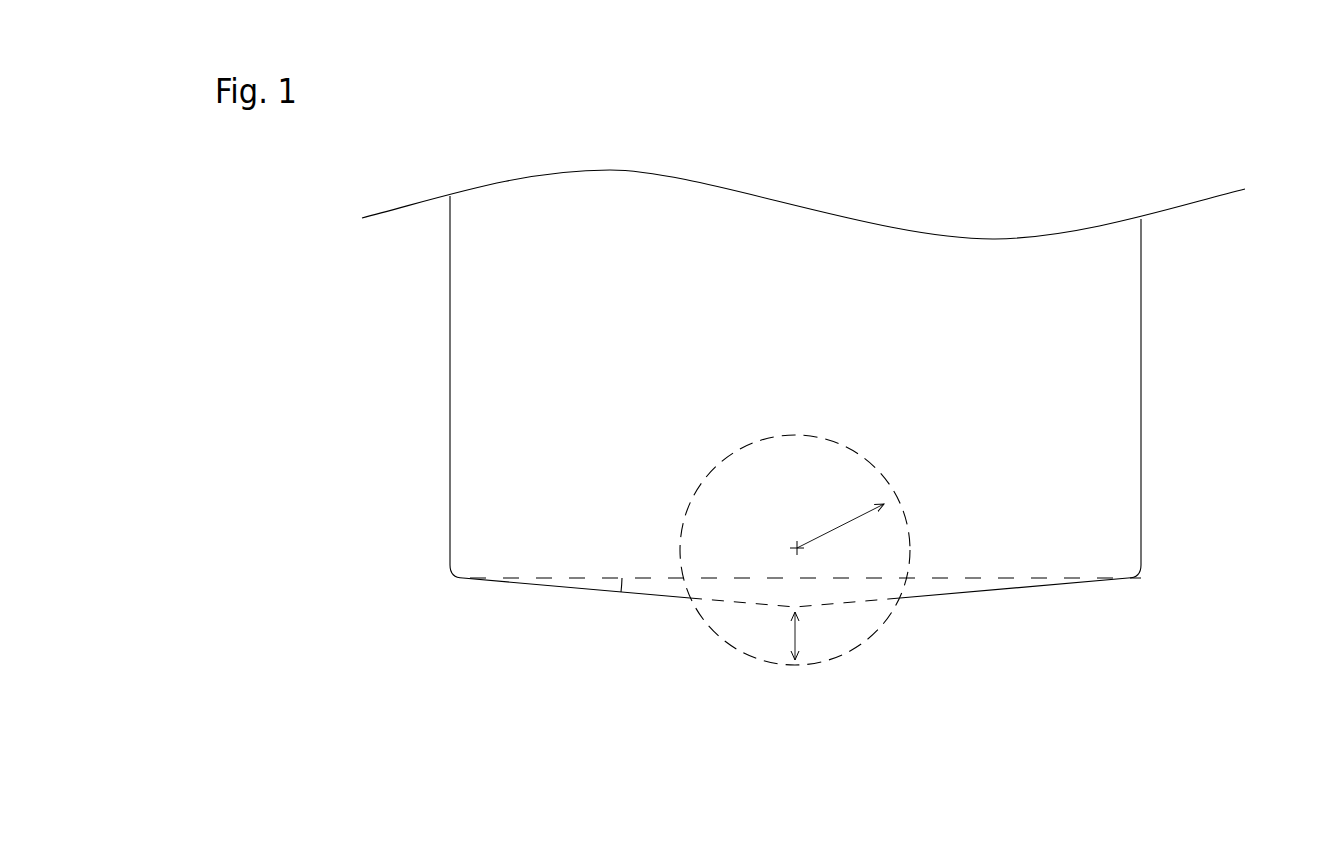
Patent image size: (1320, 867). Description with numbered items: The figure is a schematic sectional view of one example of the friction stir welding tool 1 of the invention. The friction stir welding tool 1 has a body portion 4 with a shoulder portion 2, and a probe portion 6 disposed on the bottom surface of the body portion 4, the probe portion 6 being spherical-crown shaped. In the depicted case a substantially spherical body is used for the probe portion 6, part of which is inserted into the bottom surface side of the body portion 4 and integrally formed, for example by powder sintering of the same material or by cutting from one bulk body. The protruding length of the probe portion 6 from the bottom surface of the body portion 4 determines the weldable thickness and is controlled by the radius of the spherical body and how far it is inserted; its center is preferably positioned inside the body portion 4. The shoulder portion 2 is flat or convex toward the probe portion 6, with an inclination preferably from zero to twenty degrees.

The friction stir welding tool 1 is at (572, 714).
The shoulder portion 2 is at (990, 591).
The body portion 4 is at (1117, 406).
The probe portion 6 is at (862, 630).